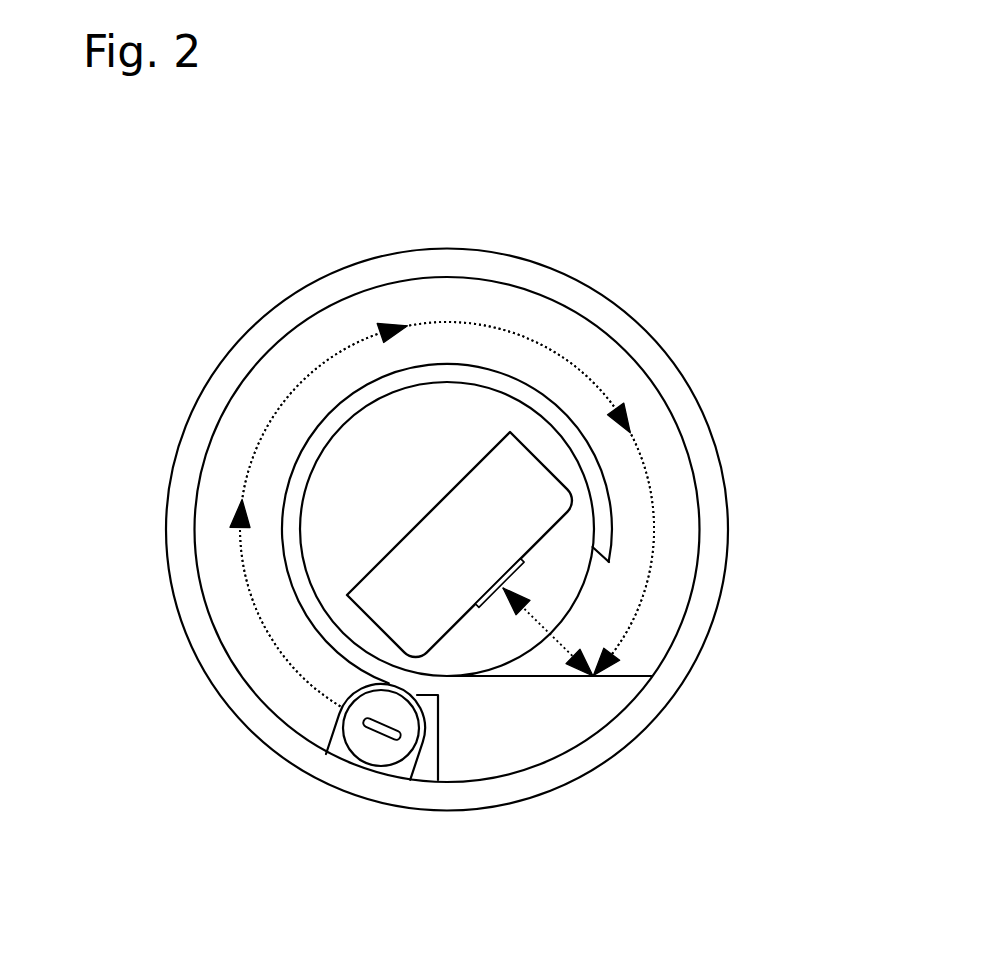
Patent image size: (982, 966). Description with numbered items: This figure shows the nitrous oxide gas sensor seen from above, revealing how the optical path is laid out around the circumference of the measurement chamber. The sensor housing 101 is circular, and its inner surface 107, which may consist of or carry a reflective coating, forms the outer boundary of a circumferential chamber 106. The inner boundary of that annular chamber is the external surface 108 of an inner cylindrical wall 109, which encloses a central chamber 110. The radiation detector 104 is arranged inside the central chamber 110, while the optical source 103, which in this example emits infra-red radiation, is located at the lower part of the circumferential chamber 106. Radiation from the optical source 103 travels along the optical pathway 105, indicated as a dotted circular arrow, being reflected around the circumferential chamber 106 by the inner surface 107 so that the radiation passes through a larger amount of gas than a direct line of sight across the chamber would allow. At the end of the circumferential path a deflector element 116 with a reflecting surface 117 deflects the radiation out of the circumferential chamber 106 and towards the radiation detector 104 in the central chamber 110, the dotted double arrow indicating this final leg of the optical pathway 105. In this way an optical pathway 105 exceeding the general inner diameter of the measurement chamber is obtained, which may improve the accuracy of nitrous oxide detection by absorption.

The housing 101 is at (243, 357).
The optical source 103 is at (373, 748).
The radiation detector 104 is at (470, 554).
The optical pathway 105 is at (252, 450).
The circumferential chamber 106 is at (242, 643).
The inner surface 107 is at (193, 520).
The external surface 108 is at (287, 562).
The inner cylindrical wall 109 is at (598, 503).
The central chamber 110 is at (397, 427).
The deflector element 116 is at (583, 702).
The reflecting surface 117 is at (550, 677).